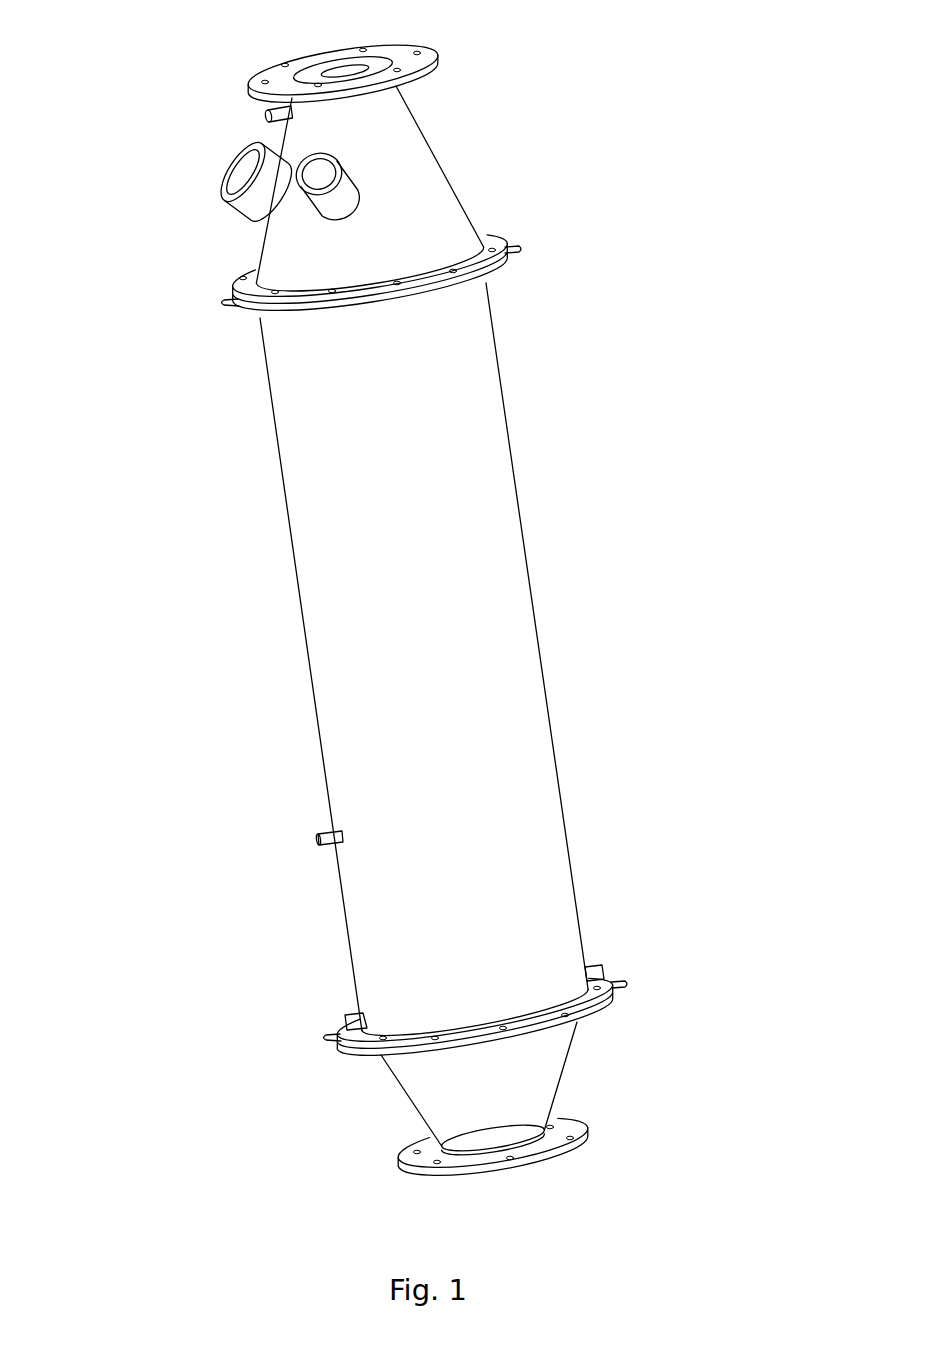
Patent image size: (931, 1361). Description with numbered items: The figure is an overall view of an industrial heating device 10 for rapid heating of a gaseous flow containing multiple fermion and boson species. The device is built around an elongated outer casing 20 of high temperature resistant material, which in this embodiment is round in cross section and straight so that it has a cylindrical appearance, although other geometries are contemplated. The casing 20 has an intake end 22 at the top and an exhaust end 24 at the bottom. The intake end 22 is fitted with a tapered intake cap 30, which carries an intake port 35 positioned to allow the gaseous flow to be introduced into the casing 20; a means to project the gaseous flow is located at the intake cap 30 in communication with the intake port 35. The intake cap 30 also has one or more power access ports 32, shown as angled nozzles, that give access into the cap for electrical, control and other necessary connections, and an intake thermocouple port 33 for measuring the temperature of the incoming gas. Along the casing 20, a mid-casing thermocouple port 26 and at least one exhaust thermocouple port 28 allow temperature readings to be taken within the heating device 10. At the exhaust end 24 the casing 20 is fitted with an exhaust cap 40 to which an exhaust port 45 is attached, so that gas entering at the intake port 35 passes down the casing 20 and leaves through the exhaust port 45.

The industrial heating device 10 is at (592, 721).
The outer casing 20 is at (353, 662).
The intake end 22 is at (548, 254).
The exhaust end 24 is at (643, 985).
The mid-casing thermocouple port 26 is at (305, 838).
The exhaust thermocouple port 28 is at (598, 962).
The intake cap 30 is at (457, 170).
The power access port 32 is at (232, 140).
The intake thermocouple port 33 is at (258, 115).
The intake port 35 is at (310, 48).
The exhaust cap 40 is at (410, 1115).
The exhaust port 45 is at (503, 1175).